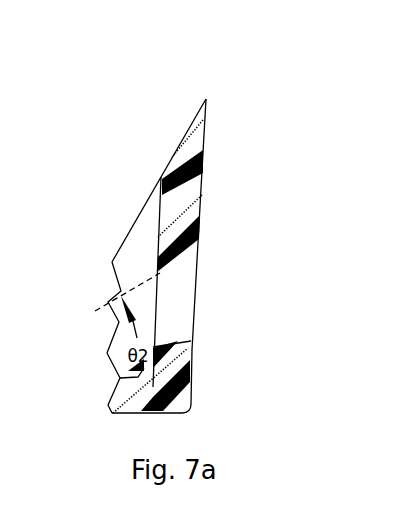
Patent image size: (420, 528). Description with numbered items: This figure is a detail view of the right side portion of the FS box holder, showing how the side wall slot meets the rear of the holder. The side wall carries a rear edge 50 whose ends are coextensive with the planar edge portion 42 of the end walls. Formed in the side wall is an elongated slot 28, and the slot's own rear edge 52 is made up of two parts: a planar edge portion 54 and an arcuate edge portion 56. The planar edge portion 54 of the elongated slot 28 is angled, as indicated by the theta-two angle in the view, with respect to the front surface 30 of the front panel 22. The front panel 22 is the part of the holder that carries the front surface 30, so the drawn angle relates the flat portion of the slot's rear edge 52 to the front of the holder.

The rear edge 50 is at (181, 140).
The planar edge portion 42 is at (132, 223).
The elongated slot 28 is at (157, 285).
The arcuate edge portion 56 is at (198, 251).
The planar edge portion 54 is at (176, 265).
The rear edge 52 is at (168, 278).
The front panel 22 is at (132, 412).
The front surface 30 is at (170, 413).